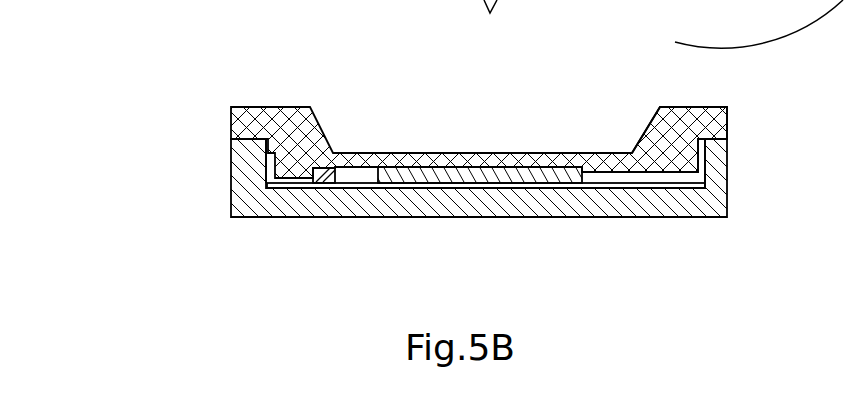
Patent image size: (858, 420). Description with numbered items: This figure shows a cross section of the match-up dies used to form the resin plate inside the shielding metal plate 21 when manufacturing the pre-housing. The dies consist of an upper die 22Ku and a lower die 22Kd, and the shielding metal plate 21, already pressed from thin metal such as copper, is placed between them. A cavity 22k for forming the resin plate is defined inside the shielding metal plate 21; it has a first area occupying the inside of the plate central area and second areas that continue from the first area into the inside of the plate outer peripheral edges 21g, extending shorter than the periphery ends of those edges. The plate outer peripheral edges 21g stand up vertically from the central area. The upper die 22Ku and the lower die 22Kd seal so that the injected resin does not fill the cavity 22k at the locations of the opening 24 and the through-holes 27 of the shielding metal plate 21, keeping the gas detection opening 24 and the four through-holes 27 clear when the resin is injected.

The lower die 22Kd is at (285, 217).
The upper die 22Ku is at (336, 160).
The cavity 22k is at (580, 152).
The shielding metal plate 21 is at (376, 170).
The plate outer peripheral edges 21g is at (231, 163).
The opening 24 is at (548, 183).
The through-holes 27 is at (313, 184).